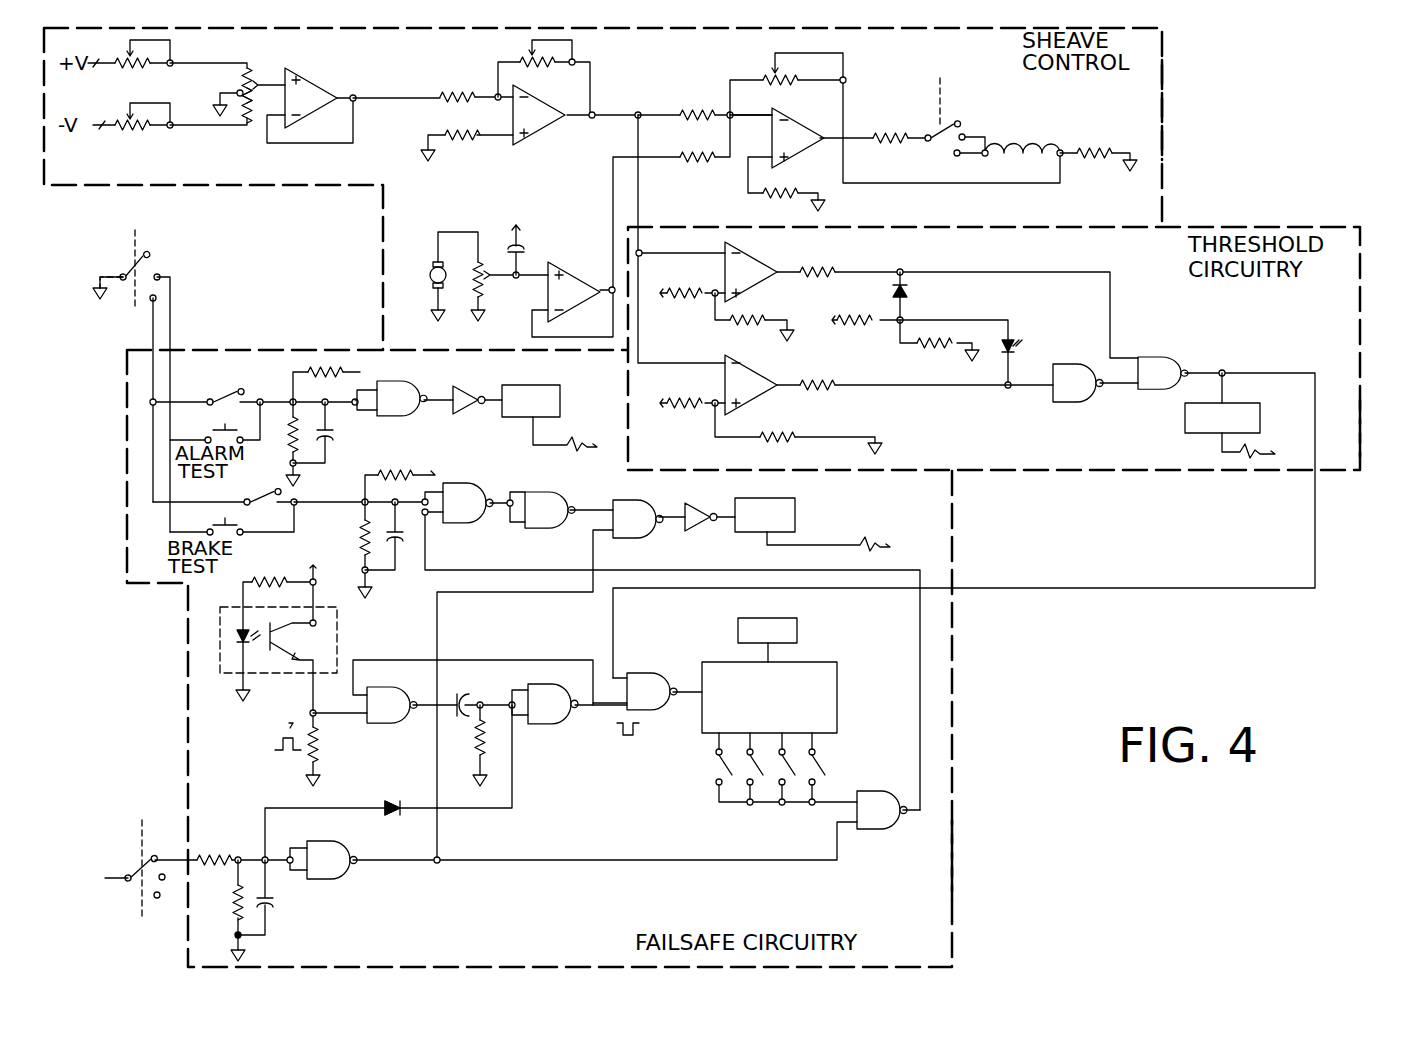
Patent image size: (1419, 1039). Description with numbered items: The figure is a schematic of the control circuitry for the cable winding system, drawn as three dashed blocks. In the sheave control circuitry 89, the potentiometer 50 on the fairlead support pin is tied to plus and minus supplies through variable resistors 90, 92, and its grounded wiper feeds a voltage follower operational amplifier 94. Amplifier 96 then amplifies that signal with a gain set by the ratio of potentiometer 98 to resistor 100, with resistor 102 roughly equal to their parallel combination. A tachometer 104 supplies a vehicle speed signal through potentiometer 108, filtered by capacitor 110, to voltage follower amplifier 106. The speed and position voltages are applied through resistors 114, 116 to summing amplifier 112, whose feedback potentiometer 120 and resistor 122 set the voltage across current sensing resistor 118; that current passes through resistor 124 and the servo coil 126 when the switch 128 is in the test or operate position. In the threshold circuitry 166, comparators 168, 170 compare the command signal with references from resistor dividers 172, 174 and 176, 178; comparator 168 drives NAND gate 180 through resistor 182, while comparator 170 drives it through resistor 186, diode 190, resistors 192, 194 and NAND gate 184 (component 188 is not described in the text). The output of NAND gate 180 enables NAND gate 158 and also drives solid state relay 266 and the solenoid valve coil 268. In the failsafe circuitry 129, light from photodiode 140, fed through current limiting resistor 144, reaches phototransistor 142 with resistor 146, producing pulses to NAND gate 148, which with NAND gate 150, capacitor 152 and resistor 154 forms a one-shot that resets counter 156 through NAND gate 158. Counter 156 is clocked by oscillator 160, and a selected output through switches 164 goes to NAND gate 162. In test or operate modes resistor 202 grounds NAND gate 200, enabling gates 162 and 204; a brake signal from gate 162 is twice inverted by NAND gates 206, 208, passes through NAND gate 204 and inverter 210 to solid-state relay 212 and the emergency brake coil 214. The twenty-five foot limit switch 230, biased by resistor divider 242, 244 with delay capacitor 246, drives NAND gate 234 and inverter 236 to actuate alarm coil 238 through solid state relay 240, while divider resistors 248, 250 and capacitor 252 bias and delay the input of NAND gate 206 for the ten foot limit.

The potentiometer 50 is at (256, 73).
The sheave control circuitry 89 is at (1162, 97).
The variable resistor 90 is at (128, 64).
The variable resistor 92 is at (148, 132).
The operational amplifier 94 is at (320, 76).
The operational amplifier 96 is at (540, 131).
The potentiometer 98 is at (527, 63).
The resistor 100 is at (452, 92).
The resistor 102 is at (467, 136).
The tachometer 104 is at (431, 267).
The operational amplifier 106 is at (565, 264).
The potentiometer 108 is at (484, 290).
The capacitor 110 is at (520, 243).
The summing amplifier 112 is at (787, 115).
The resistor 114 is at (690, 110).
The resistor 116 is at (687, 157).
The current sensing resistor 118 is at (1093, 148).
The potentiometer 120 is at (767, 80).
The resistor 122 is at (785, 188).
The resistor 124 is at (893, 130).
The solenoid coil 126 is at (1025, 138).
The switch 128 is at (930, 142).
The failsafe circuitry 129 is at (952, 863).
The photodiode 140 is at (237, 627).
The phototransistor 142 is at (315, 643).
The current limiting resistor 144 is at (272, 576).
The resistor 146 is at (317, 745).
The NAND gate 148 is at (388, 723).
The NAND gate 150 is at (548, 724).
The capacitor 152 is at (465, 703).
The resistor 154 is at (475, 760).
The counter 156 is at (837, 688).
The NAND gate 158 is at (645, 673).
The oscillator 160 is at (797, 630).
The NAND gate 162 is at (875, 830).
The switches 164 is at (820, 768).
The threshold circuitry 166 is at (1360, 428).
The comparator 168 is at (754, 266).
The comparator 170 is at (770, 400).
The resistor divider resistor 172 is at (683, 280).
The resistor divider resistor 174 is at (731, 322).
The resistor divider resistor 176 is at (685, 410).
The resistor divider resistor 178 is at (777, 440).
The NAND gate 180 is at (1168, 357).
The resistor 182 is at (822, 272).
The NAND gate 184 is at (1075, 405).
The resistor 186 is at (822, 385).
The diode 188 is at (908, 292).
The diode 190 is at (1015, 346).
The resistor 192 is at (932, 348).
The resistor 194 is at (868, 320).
The NAND gate 200 is at (345, 878).
The resistor 202 is at (237, 905).
The NAND gate 204 is at (630, 538).
The NAND gate 206 is at (470, 538).
The NAND gate 208 is at (545, 538).
The inverter 210 is at (700, 530).
The solid-state relay 212 is at (795, 503).
The coil 214 is at (866, 545).
The 25 foot limit switch 230 is at (213, 393).
The NAND gate 234 is at (403, 382).
The inverter 236 is at (470, 387).
The coil 238 is at (566, 452).
The solid state relay 240 is at (554, 385).
The resistor 242 is at (323, 363).
The resistor 244 is at (305, 460).
The capacitor 246 is at (331, 433).
The resistor 248 is at (398, 473).
The resistor 250 is at (362, 538).
The capacitor 252 is at (400, 545).
The solid state relay 266 is at (1185, 425).
The coil 268 is at (1218, 452).